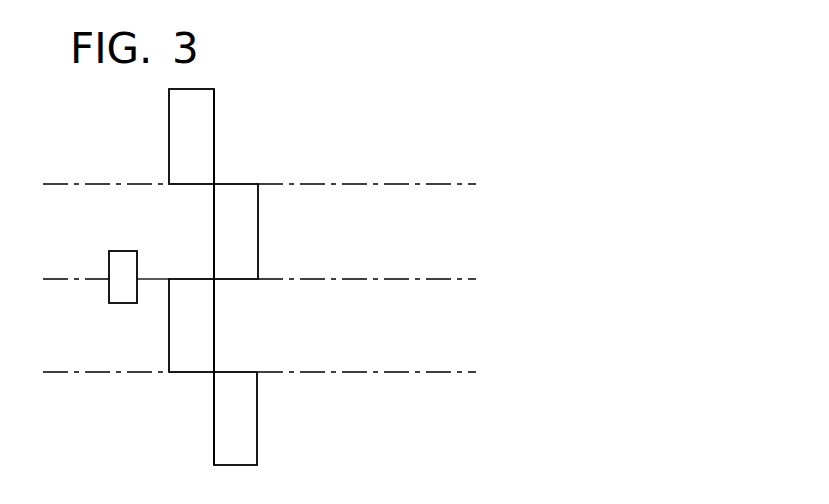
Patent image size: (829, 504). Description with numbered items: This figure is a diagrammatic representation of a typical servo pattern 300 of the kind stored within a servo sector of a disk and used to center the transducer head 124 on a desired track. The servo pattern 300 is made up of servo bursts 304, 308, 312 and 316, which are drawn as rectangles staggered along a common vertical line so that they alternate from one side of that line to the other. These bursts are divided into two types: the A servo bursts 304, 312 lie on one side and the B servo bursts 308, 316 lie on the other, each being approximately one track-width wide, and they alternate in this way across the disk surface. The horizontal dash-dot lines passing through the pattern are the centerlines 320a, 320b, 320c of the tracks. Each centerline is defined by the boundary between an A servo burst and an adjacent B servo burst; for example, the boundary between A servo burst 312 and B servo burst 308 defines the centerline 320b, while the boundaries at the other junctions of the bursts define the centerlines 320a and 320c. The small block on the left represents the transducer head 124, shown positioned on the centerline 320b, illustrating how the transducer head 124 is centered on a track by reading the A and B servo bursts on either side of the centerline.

The servo pattern 300 is at (260, 88).
The A servo burst 304 is at (169, 144).
The B servo burst 308 is at (258, 247).
The A servo burst 312 is at (167, 345).
The B servo burst 316 is at (257, 432).
The transducer head 124 is at (109, 263).
The centerline 320a is at (418, 184).
The centerline 320b is at (418, 279).
The centerline 320c is at (418, 372).